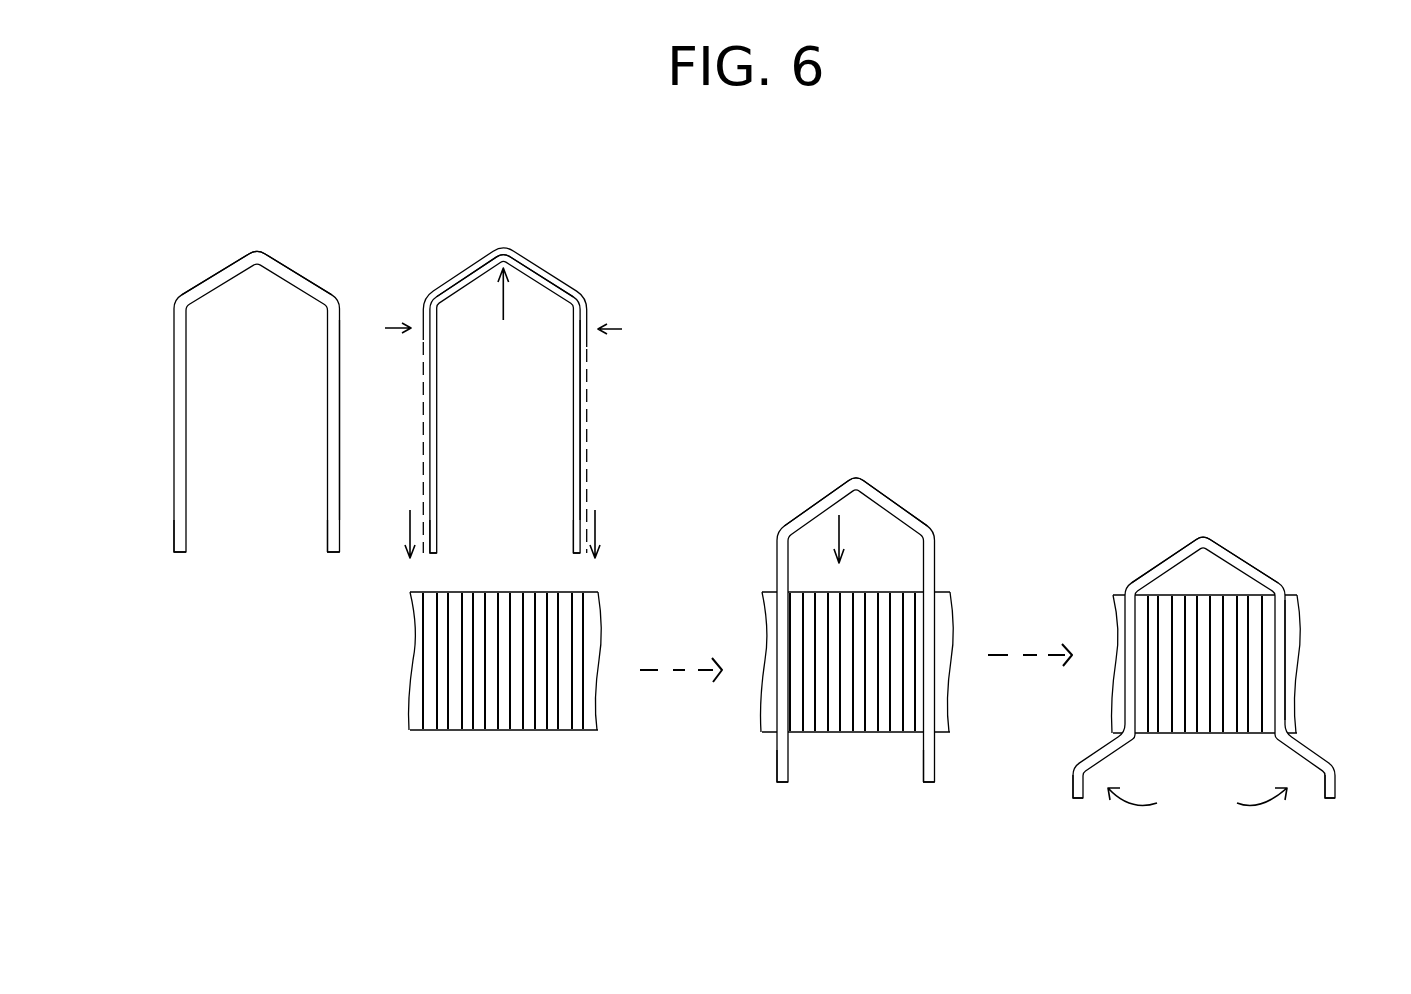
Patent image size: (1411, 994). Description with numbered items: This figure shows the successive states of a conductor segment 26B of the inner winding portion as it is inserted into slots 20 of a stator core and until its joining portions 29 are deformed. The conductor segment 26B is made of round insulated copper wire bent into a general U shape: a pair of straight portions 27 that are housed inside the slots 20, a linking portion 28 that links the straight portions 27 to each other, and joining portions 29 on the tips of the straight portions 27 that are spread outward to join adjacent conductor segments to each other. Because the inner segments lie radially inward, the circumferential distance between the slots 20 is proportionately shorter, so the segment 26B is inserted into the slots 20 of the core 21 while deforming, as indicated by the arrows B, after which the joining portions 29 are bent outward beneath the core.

The slots 20 is at (428, 712).
The fibrous mat 21 is at (502, 730).
The conductor segments 26B is at (328, 420).
The straight portions 27 is at (340, 425).
The linking portion 28 is at (292, 270).
The joining portions 29 is at (172, 517).
The arrows B is at (388, 325).